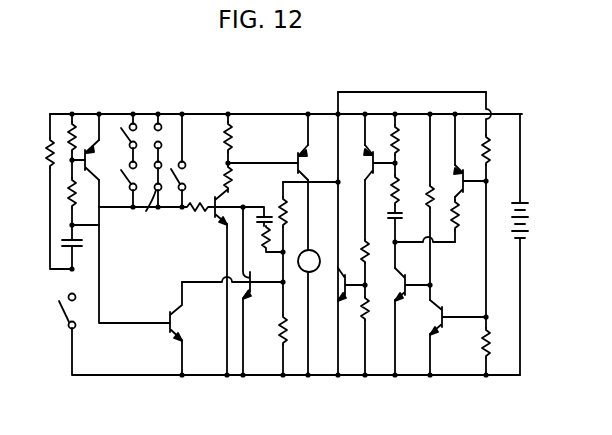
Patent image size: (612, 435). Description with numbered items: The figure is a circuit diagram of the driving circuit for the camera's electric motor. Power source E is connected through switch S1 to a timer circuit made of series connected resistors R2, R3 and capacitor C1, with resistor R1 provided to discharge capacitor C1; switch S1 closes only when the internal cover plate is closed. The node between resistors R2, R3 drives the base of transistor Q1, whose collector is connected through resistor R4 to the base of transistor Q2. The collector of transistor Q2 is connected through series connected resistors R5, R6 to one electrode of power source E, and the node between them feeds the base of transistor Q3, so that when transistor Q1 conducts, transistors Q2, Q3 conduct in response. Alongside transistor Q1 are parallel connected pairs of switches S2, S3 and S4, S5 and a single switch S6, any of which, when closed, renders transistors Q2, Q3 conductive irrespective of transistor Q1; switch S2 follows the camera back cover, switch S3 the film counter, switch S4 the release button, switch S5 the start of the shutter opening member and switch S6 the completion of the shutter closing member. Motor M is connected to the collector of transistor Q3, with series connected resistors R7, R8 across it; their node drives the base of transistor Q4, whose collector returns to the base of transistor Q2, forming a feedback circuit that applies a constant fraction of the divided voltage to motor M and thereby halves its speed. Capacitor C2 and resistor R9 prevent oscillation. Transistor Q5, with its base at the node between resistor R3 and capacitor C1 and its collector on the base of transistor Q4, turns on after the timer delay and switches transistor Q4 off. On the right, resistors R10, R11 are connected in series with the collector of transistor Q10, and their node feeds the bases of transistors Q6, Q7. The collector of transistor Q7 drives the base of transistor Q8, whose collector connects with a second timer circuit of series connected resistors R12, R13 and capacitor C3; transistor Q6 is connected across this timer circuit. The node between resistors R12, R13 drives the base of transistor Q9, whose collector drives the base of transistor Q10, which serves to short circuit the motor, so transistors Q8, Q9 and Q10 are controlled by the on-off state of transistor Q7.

The resistor R1 is at (36, 154).
The resistor R2 is at (86, 148).
The resistor R3 is at (78, 196).
The resistor R4 is at (199, 218).
The resistor R5 is at (244, 137).
The resistor R6 is at (244, 175).
The resistor R7 is at (280, 212).
The resistor R8 is at (278, 320).
The resistor R9 is at (268, 248).
The resistor R10 is at (486, 161).
The resistor R11 is at (482, 348).
The resistor R12 is at (409, 151).
The resistor R13 is at (409, 201).
The capacitor C1 is at (78, 243).
The capacitor C2 is at (259, 224).
The capacitor C3 is at (401, 214).
The transistor Q1 is at (109, 160).
The transistor Q2 is at (236, 207).
The transistor Q3 is at (318, 162).
The transistor Q4 is at (261, 291).
The transistor Q5 is at (192, 328).
The transistor Q6 is at (458, 181).
The transistor Q7 is at (432, 318).
The transistor Q8 is at (400, 284).
The transistor Q9 is at (368, 162).
The transistor Q10 is at (338, 284).
The switch S1 is at (82, 311).
The switch S2 is at (121, 141).
The switch S3 is at (120, 183).
The switch S4 is at (156, 142).
The switch S5 is at (149, 198).
The switch S6 is at (194, 176).
The motor M is at (309, 261).
The power source E is at (528, 214).